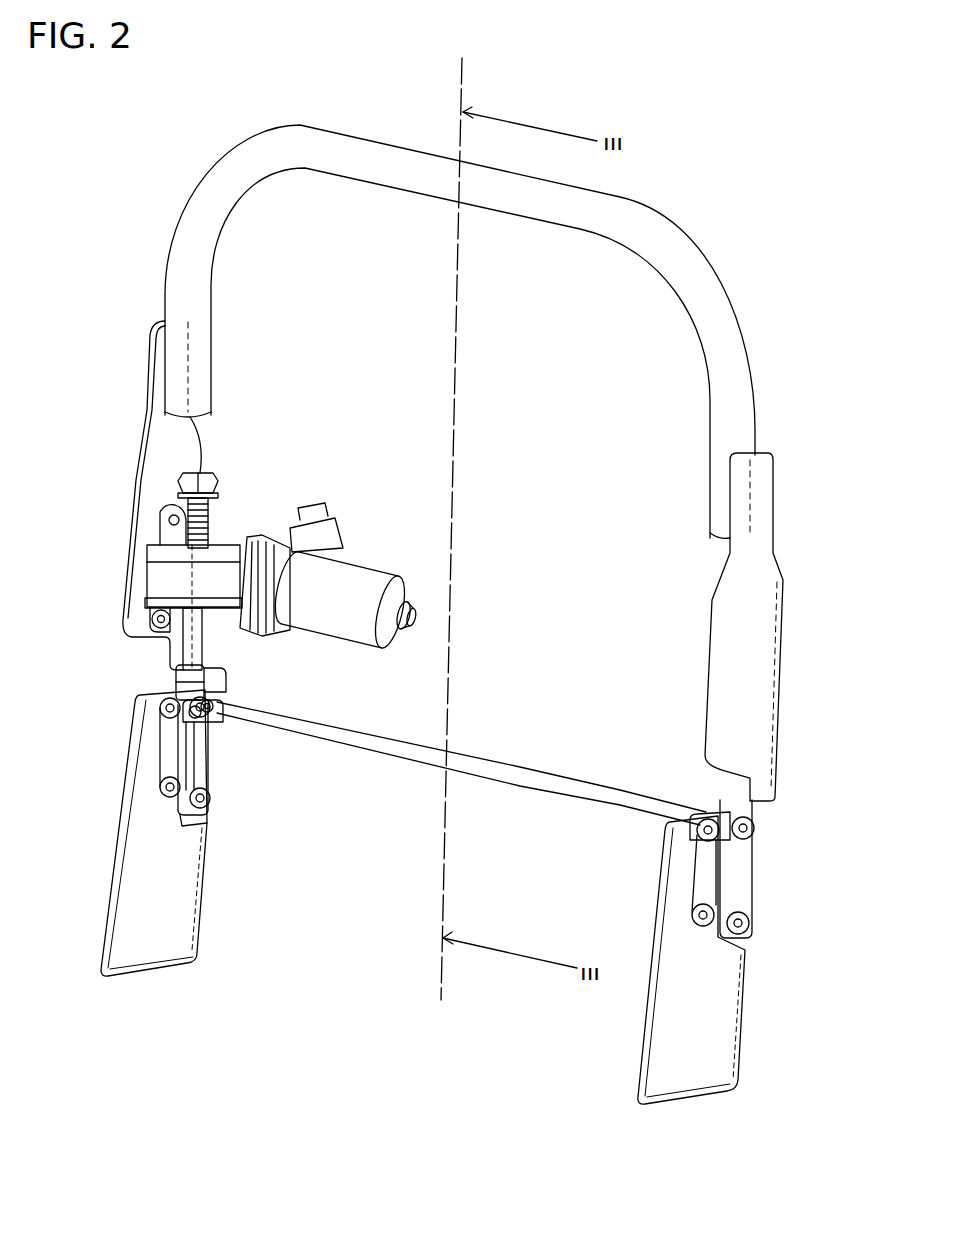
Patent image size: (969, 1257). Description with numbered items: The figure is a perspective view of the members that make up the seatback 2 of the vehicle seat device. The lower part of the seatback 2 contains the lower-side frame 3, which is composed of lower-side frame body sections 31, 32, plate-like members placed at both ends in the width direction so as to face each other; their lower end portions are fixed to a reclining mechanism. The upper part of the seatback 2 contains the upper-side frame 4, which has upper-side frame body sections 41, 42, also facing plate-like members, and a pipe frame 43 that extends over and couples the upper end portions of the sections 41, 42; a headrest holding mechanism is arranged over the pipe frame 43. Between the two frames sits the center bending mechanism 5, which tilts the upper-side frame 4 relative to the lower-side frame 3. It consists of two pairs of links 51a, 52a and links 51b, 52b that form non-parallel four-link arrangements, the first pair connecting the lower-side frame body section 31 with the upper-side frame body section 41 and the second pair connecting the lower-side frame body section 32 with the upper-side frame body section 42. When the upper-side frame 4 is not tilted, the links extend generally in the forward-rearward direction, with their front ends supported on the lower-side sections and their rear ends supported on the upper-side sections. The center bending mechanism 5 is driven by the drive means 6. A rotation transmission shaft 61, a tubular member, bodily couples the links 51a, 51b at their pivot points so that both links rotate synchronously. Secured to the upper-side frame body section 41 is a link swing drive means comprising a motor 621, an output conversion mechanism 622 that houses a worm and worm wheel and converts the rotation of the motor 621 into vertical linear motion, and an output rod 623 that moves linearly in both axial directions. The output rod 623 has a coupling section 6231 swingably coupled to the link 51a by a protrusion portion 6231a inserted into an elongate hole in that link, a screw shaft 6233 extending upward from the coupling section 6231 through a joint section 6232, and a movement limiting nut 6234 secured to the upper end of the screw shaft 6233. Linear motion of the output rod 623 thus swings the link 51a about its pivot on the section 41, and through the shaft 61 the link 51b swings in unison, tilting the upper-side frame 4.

The seatback 2 is at (663, 178).
The lower-side frame 3 is at (275, 942).
The lower-side frame body section 31 is at (175, 892).
The lower-side frame body section 32 is at (710, 1028).
The upper-side frame 4 is at (680, 410).
The upper-side frame body section 41 is at (160, 460).
The upper-side frame body section 42 is at (750, 717).
The pipe frame 43 is at (705, 312).
The center bending mechanism 5 is at (275, 802).
The link 51a is at (200, 732).
The link 51b is at (710, 812).
The link 52a is at (195, 815).
The link 52b is at (735, 908).
The drive means 6 is at (300, 440).
The rotation transmission shaft 61 is at (530, 762).
The motor 621 is at (360, 580).
The output conversion mechanism 622 is at (180, 580).
The output rod 623 is at (205, 648).
The coupling section 6231 is at (220, 690).
The protrusion portion 6231a is at (218, 738).
The joint section 6232 is at (180, 672).
The screw shaft 6233 is at (213, 525).
The movement limiting nut 6234 is at (260, 466).